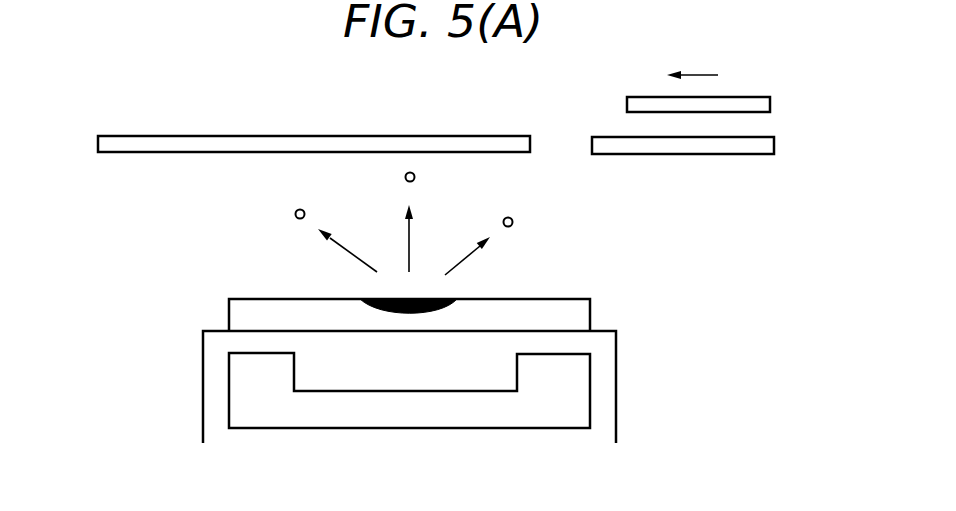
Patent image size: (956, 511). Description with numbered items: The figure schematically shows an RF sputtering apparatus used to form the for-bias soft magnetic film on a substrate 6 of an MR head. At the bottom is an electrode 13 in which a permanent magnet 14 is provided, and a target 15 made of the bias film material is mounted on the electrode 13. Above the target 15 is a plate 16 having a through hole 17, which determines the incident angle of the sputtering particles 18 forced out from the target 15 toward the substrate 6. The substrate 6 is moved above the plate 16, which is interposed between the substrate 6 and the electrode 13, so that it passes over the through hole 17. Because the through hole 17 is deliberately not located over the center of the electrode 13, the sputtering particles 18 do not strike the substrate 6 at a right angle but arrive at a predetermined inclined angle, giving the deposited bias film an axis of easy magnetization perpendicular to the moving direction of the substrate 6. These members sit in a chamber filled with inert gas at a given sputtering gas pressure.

The substrate 6 is at (763, 103).
The electrode 13 is at (607, 394).
The permanent magnet 14 is at (513, 410).
The target 15 is at (568, 315).
The plate 16 is at (486, 146).
The through hole 17 is at (558, 148).
The sputtering particles 18 is at (513, 224).